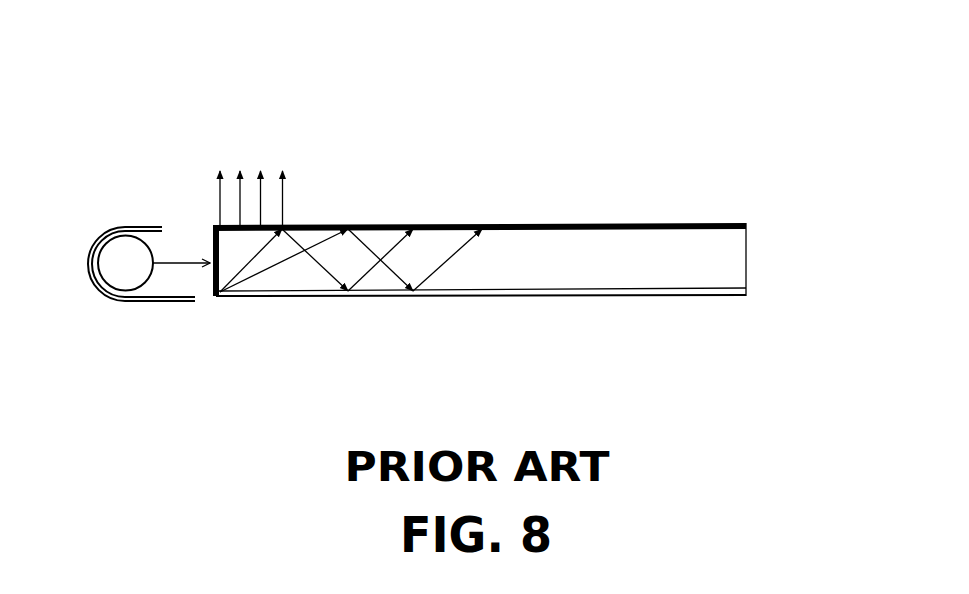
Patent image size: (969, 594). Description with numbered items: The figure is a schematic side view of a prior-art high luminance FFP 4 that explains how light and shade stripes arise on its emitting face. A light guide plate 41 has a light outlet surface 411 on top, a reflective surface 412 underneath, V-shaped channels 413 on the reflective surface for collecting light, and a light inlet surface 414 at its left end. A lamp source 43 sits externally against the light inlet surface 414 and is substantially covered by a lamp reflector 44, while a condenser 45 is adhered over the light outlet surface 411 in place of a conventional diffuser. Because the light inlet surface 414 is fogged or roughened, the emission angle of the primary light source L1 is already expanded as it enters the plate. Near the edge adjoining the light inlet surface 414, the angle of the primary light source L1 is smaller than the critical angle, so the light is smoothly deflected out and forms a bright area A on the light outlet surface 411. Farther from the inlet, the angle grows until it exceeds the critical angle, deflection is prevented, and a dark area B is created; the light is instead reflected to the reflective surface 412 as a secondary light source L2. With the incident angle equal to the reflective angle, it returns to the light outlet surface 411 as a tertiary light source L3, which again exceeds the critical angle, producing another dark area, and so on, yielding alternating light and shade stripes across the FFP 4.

The FFP 4 is at (185, 94).
The light guide plate 41 is at (475, 266).
The light outlet surface 411 is at (507, 226).
The reflective surface 412 is at (738, 297).
The channels 413 is at (263, 292).
The light inlet surface 414 is at (217, 286).
The lamp source 43 is at (112, 247).
The lamp reflector 44 is at (97, 290).
The condenser 45 is at (738, 198).
The bright area A is at (218, 162).
The dark area B is at (285, 222).
The primary light source L1 is at (253, 260).
The secondary light source L2 is at (320, 245).
The tertiary light source L3 is at (392, 250).